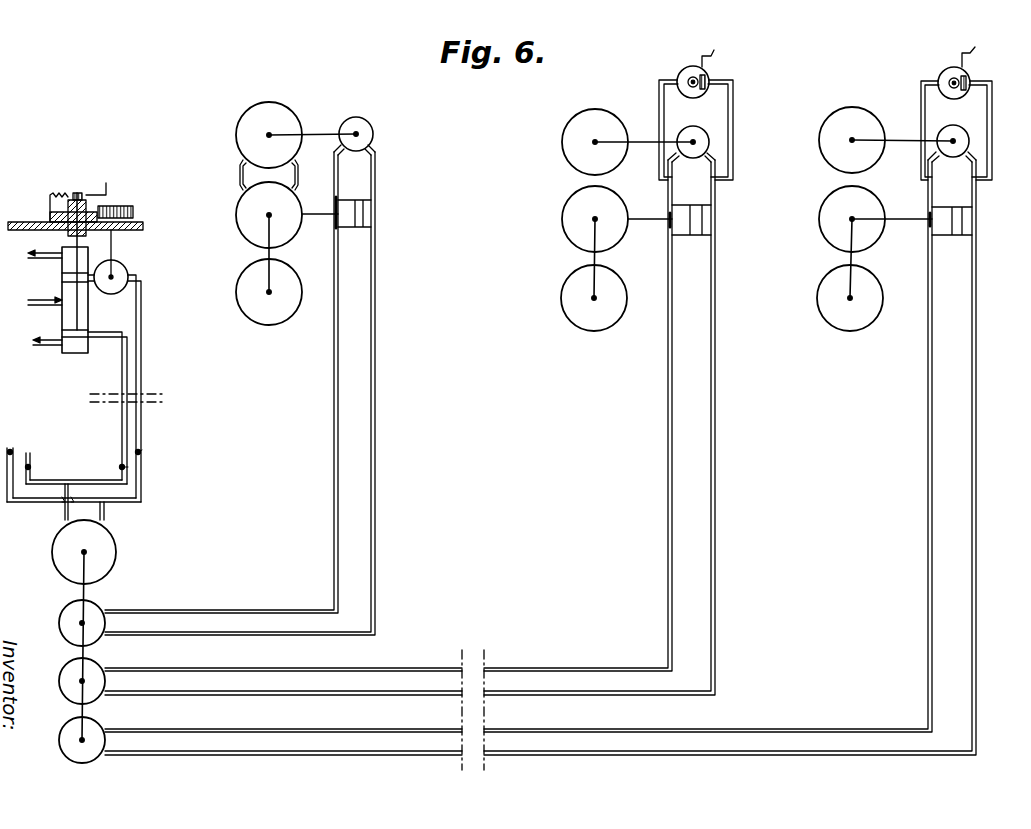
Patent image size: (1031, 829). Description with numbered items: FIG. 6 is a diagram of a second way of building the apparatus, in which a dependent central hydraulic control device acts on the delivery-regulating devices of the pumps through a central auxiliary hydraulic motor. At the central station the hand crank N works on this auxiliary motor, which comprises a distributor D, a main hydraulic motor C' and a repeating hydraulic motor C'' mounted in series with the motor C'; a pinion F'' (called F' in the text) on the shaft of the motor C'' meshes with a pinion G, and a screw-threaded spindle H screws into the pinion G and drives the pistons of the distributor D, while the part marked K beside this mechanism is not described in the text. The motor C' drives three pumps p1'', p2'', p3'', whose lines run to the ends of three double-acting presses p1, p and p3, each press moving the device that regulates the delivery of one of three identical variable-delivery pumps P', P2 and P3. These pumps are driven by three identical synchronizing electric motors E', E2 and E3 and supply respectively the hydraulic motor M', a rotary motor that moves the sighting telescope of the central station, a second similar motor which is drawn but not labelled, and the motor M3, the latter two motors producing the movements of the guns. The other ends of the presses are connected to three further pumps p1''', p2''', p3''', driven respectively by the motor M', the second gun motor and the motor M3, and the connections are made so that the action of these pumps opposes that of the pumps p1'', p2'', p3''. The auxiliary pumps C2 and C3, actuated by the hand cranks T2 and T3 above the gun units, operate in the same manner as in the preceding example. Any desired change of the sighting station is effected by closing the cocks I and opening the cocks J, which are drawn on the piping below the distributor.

The pinion G is at (48, 216).
The bearing block K is at (52, 195).
The screw-threaded spindle H is at (79, 194).
The hand crank N is at (108, 185).
The pinion F'' is at (135, 231).
The repeating hydraulic motor C'' is at (126, 273).
The distributor D is at (62, 322).
The cocks J is at (28, 467).
The cocks I is at (138, 452).
The main hydraulic motor C' is at (101, 552).
The pump p1'' is at (64, 623).
The pump p2'' is at (64, 681).
The pump p3'' is at (64, 740).
The hydraulic motor M' is at (296, 143).
The pump p1''' is at (378, 136).
The variable-delivery pump P' is at (279, 215).
The synchronizing electric motor E' is at (283, 270).
The double-acting press p1 is at (354, 212).
The auxiliary pump C2 is at (685, 70).
The hand crank T2 is at (720, 52).
The pump p2''' is at (724, 138).
The variable-delivery pump P2 is at (613, 205).
The synchronizing electric motor E2 is at (615, 312).
The double-acting press p is at (705, 222).
The hydraulic motor M3 is at (857, 121).
The auxiliary pump C3 is at (947, 73).
The hand crank T3 is at (986, 50).
The pump p3''' is at (979, 139).
The variable-delivery pump P3 is at (873, 210).
The synchronizing electric motor E3 is at (866, 312).
The double-acting press p3 is at (932, 220).